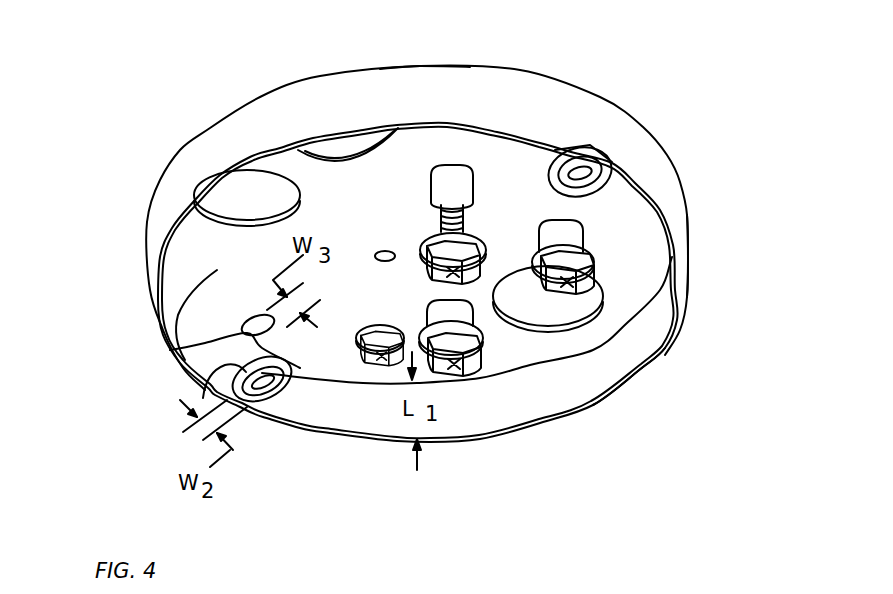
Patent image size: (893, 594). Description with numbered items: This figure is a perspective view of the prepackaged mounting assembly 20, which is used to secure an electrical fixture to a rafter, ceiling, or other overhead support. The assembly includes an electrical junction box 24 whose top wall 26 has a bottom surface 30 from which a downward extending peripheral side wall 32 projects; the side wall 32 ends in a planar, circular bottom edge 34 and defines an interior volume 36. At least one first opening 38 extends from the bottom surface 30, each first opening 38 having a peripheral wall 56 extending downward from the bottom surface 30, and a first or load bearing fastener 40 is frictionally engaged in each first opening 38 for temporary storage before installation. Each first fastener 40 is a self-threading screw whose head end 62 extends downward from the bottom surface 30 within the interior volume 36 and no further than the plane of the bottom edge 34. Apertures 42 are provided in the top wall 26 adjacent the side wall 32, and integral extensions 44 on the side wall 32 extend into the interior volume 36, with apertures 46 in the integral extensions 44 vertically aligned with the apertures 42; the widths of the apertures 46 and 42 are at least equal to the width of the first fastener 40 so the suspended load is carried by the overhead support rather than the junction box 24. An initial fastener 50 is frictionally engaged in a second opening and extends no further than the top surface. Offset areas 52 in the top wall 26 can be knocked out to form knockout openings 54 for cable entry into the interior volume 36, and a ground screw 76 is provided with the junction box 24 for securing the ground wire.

The prepackaged mounting assembly 20 is at (168, 116).
The electrical junction box 24 is at (410, 78).
The top wall 26 is at (160, 298).
The bottom surface 30 is at (410, 200).
The peripheral side wall 32 is at (253, 153).
The bottom edge 34 is at (683, 278).
The interior volume 36 is at (568, 372).
The first opening 38 is at (600, 242).
The first fastener 40 is at (585, 222).
The aperture 42 is at (170, 350).
The integral extension 44 is at (558, 152).
The aperture 46 is at (610, 170).
The initial fastener 50 is at (497, 255).
The offset area 52 is at (347, 147).
The knockout opening 54 is at (262, 207).
The peripheral wall 56 is at (570, 228).
The head end 62 is at (451, 366).
The ground screw 76 is at (385, 360).